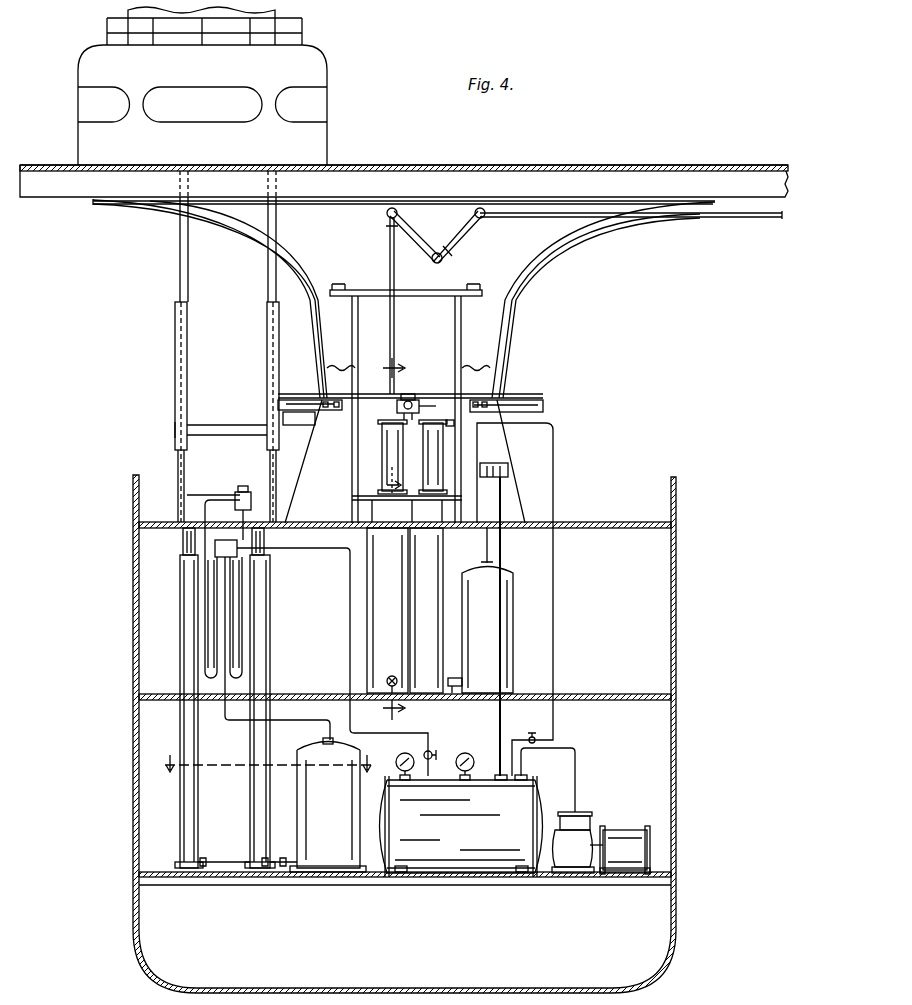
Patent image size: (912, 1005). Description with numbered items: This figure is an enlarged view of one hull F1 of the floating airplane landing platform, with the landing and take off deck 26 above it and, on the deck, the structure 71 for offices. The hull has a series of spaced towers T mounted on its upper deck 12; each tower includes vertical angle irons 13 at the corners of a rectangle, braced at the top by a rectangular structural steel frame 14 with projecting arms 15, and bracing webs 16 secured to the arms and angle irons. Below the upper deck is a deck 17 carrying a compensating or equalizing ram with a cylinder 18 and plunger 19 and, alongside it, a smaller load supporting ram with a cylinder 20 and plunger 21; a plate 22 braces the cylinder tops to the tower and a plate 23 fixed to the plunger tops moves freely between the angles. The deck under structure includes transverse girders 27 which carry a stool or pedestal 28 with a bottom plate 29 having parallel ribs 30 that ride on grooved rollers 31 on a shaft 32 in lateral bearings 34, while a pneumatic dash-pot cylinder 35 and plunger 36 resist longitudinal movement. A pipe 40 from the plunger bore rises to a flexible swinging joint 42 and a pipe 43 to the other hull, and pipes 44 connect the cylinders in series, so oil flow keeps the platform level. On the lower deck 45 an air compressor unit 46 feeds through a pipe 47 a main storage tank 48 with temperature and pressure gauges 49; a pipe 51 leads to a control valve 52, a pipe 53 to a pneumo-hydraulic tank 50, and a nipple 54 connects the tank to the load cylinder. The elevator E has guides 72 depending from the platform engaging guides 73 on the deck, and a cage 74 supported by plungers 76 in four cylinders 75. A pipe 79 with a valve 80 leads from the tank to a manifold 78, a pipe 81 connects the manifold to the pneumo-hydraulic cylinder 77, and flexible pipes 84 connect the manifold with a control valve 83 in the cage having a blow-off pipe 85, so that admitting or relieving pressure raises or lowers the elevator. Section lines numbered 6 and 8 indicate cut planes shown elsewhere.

The structure 71 is at (318, 153).
The landing and take off deck 26 is at (556, 170).
The transverse girders 27 is at (580, 186).
The guides 72 is at (262, 264).
The guides 73 is at (266, 358).
The cage 74 is at (220, 435).
The elevator E is at (166, 431).
The pipe 40 is at (388, 258).
The flexible swinging joint 42 is at (460, 235).
The pipe 43 is at (635, 232).
The stool or pedestal 28 is at (516, 275).
The rectangular structural steel frame 14 is at (428, 306).
The projecting arms 15 is at (480, 289).
The vertical angle irons 13 is at (350, 465).
The towers T is at (490, 345).
The parallel ribs 30 is at (470, 392).
The pneumatic dash-pot cylinder 35 is at (306, 398).
The plunger 36 is at (352, 410).
The lateral bearings 34 is at (397, 398).
The grooved rollers 31 is at (406, 394).
The bottom plate 29 is at (443, 396).
The shaft 32 is at (405, 416).
The plunger 19 is at (390, 472).
The plunger 21 is at (433, 460).
The plate 23 is at (452, 428).
The plate 22 is at (358, 498).
The control valve 52 is at (508, 470).
The bracing webs 16 is at (318, 410).
The section line 6 is at (386, 541).
The hull F1 is at (677, 762).
The upper deck 12 is at (635, 522).
The deck 17 is at (635, 694).
The lower deck 45 is at (668, 872).
The blow-off pipe 85 is at (205, 495).
The control valve 83 is at (247, 490).
The manifold 78 is at (215, 548).
The plungers 76 is at (183, 550).
The flexible pipes 84 is at (207, 593).
The pipe 81 is at (250, 722).
The pipe 79 is at (348, 612).
The cylinders 75 is at (250, 806).
The pneumo-hydraulic cylinder 77 is at (326, 870).
The section line 8 is at (266, 764).
The cylinder 18 is at (367, 641).
The cylinder 20 is at (436, 549).
The pipes 44 is at (387, 681).
The pipe 53 is at (489, 546).
The nipple 54 is at (462, 670).
The pneumo-hydraulic tank 50 is at (503, 659).
The pipe 51 is at (503, 724).
The main storage tank 48 is at (505, 865).
The temperature and pressure gauges 49 is at (407, 752).
The valve 80 is at (433, 750).
The pipe 47 is at (577, 788).
The air compressor unit 46 is at (585, 828).